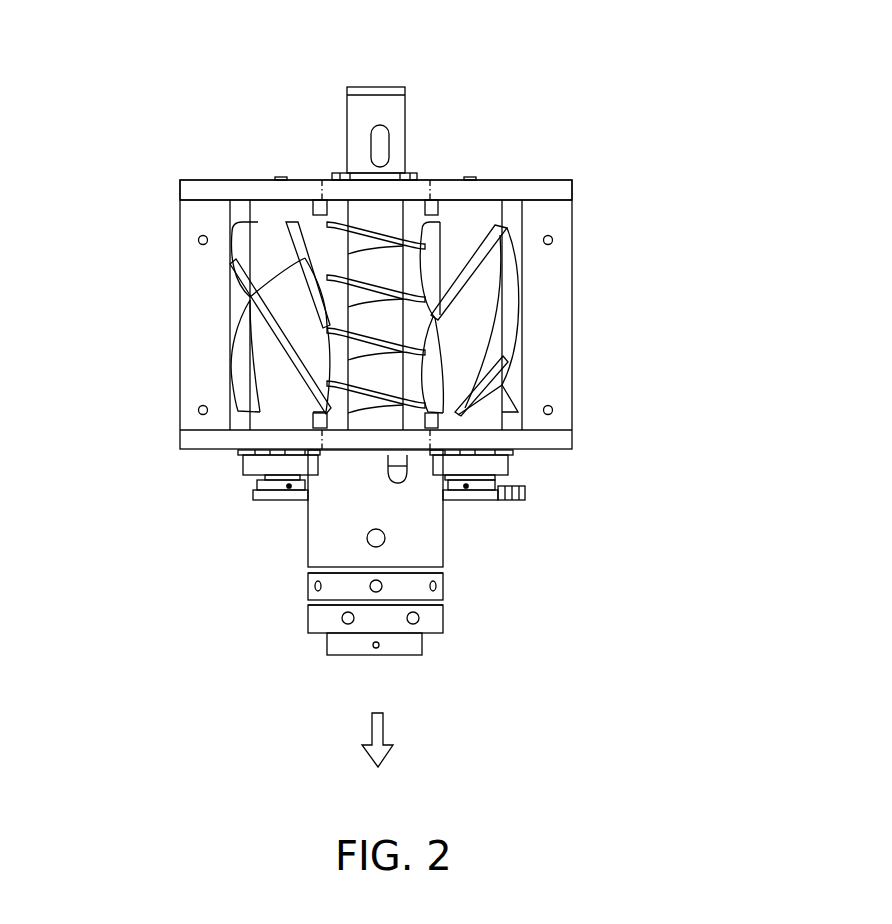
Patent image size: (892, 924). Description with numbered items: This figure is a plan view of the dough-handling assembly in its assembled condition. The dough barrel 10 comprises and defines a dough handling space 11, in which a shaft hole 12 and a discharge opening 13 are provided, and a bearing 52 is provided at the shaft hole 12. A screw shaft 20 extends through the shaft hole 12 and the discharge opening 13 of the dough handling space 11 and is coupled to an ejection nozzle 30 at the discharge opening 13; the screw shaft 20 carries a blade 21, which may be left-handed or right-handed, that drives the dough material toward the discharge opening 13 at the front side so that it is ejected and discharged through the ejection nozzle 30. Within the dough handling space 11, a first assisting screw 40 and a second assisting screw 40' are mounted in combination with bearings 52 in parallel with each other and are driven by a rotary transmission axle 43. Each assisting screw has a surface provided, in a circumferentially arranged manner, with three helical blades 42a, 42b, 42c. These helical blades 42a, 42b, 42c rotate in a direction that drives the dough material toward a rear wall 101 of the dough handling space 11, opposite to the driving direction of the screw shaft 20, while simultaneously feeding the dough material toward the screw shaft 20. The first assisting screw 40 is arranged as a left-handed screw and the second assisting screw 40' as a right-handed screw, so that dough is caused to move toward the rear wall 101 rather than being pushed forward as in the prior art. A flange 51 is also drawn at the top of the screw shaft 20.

The dough barrel 10 is at (572, 323).
The rear wall 101 is at (481, 188).
The dough handling space 11 is at (516, 250).
The shaft hole 12 is at (421, 186).
The discharge opening 13 is at (363, 440).
The screw shaft 20 is at (380, 86).
The blade 21 is at (355, 297).
The ejection nozzle 30 is at (438, 552).
The first assisting screw 40 is at (501, 266).
The second assisting screw 40' is at (251, 267).
The helical blade 42a is at (307, 260).
The helical blade 42b is at (333, 300).
The helical blade 42c is at (234, 391).
The rotary transmission axle 43 is at (284, 180).
The flange 51 is at (342, 172).
The bearing 52 is at (497, 466).